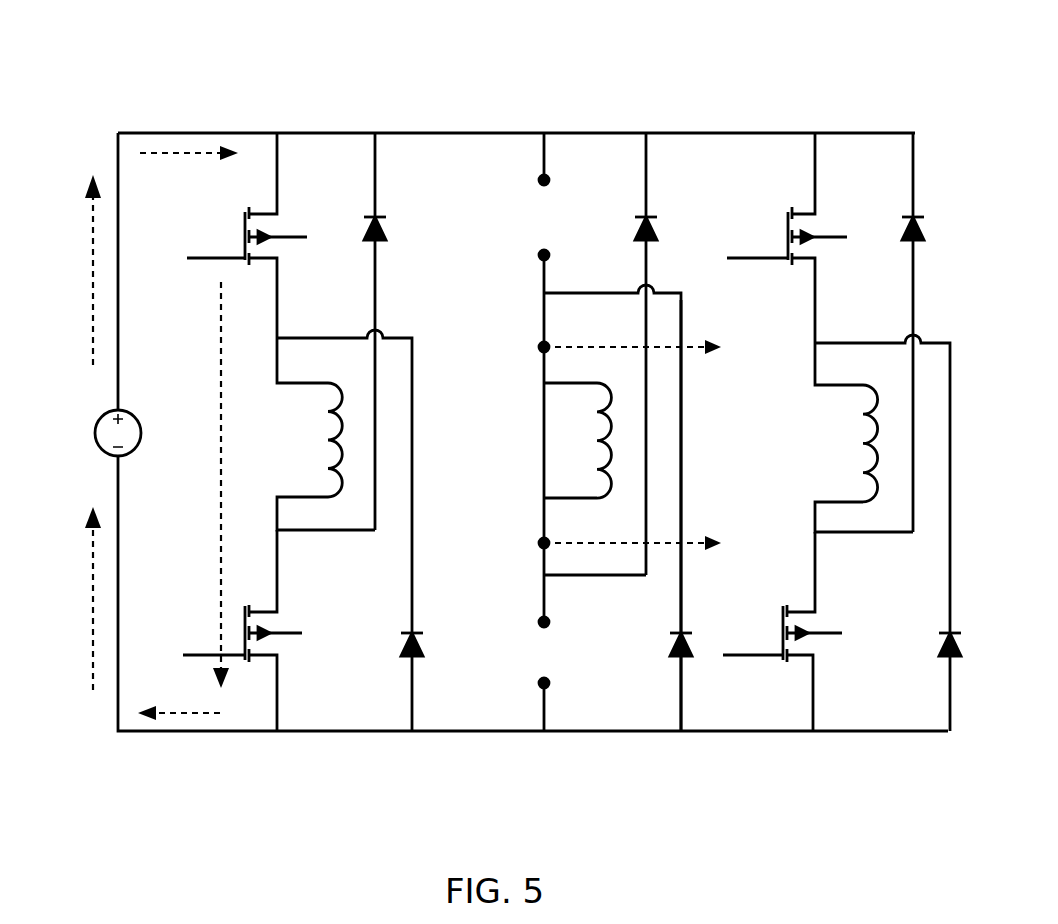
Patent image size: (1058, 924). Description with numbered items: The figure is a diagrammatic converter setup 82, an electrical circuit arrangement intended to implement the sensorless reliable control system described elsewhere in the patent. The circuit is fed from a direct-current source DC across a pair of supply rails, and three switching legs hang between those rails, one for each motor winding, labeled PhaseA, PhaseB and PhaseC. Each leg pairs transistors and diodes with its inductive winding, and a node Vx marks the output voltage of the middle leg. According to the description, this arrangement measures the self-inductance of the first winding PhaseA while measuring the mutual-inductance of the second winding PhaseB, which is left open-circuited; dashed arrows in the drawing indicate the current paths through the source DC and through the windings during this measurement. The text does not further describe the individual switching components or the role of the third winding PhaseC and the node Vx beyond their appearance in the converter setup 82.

The converter setup 82 is at (584, 96).
The DC voltage source DC is at (93, 433).
The phase output voltage node Vx is at (695, 515).
The phase A PhaseA is at (303, 432).
The phase B PhaseB is at (592, 432).
The phase C leg with inductor PhaseC is at (842, 432).